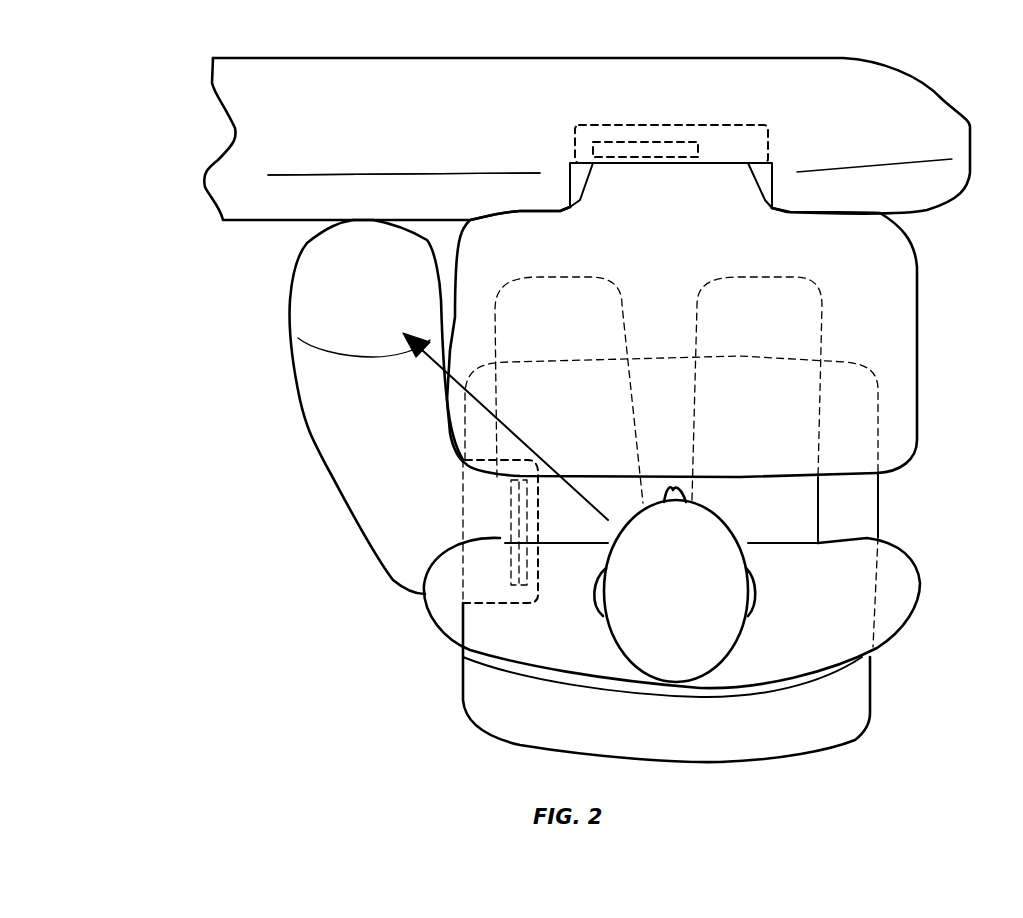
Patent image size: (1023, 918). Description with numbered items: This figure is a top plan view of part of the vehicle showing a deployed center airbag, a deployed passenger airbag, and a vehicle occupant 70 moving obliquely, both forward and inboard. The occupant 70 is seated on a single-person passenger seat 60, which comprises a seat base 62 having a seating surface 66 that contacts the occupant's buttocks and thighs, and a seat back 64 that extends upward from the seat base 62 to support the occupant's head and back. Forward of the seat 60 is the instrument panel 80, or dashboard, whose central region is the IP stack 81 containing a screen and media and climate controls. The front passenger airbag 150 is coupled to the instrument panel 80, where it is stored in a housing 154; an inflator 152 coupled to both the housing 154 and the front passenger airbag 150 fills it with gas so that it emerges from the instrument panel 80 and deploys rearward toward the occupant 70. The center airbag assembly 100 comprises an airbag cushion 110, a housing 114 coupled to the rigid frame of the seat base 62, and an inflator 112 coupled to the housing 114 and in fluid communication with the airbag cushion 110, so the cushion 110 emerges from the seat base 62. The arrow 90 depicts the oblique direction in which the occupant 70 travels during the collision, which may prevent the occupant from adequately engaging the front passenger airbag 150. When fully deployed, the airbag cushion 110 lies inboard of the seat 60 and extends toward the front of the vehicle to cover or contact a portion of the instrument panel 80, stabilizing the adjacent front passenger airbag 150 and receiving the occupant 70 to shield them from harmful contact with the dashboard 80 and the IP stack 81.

The passenger seat 60 is at (454, 695).
The seat base 62 is at (877, 483).
The seat back 64 is at (850, 703).
The seating surface 66 is at (853, 526).
The vehicle occupant 70 is at (850, 609).
The instrument panel 80 is at (550, 108).
The IP stack 81 is at (336, 208).
The arrow 90 is at (515, 445).
The center airbag assembly 100 is at (234, 584).
The airbag cushion 110 is at (283, 307).
The inflator 112 is at (510, 560).
The housing 114 is at (483, 508).
The front passenger airbag 150 is at (887, 308).
The inflator 152 is at (632, 140).
The housing 154 is at (733, 140).